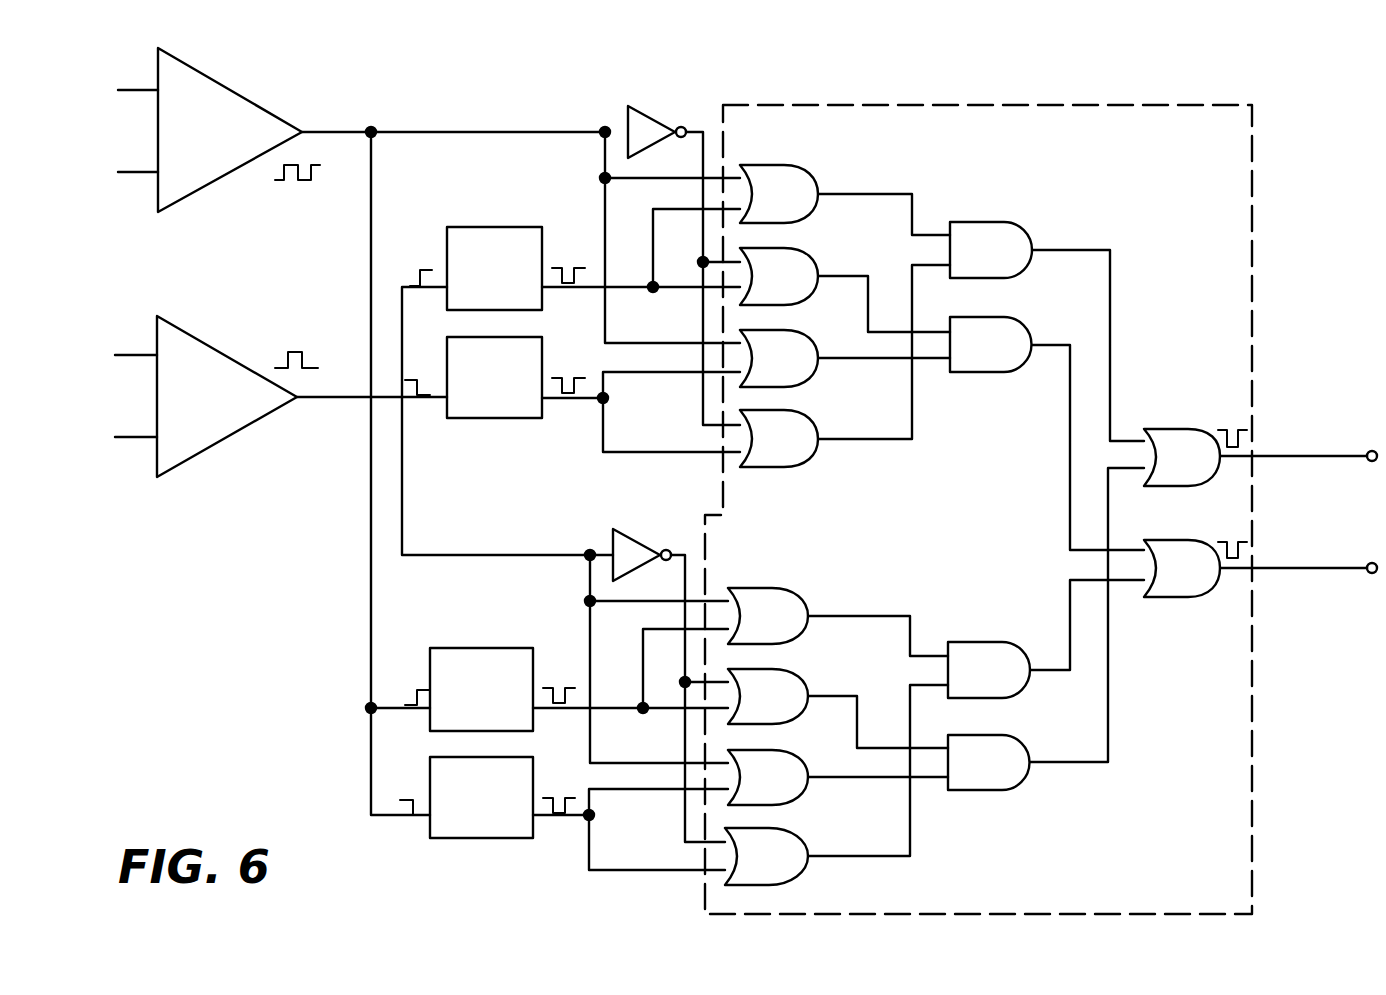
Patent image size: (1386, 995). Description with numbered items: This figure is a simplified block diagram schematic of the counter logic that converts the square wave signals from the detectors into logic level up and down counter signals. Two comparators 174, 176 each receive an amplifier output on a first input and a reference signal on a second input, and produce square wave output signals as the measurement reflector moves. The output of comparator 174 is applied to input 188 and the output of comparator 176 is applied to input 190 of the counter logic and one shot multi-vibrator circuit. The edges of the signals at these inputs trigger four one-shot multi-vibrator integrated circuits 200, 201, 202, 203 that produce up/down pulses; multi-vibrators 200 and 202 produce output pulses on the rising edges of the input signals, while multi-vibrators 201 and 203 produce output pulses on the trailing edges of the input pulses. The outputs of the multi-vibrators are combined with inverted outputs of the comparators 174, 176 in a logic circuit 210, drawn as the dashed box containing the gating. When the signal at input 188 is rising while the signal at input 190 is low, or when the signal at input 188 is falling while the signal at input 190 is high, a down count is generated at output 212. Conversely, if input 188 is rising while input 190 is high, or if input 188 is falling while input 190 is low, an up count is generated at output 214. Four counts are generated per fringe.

The comparator 174 is at (240, 94).
The comparator 176 is at (226, 355).
The input of counter logic and one shot multi-vibrator circuit 188 is at (343, 131).
The input of counter logic and one shot multi-vibrator circuit 190 is at (338, 400).
The one-shot multi-vibrator 200 is at (478, 227).
The one-shot multi-vibrator 201 is at (490, 418).
The one-shot multi-vibrator 202 is at (470, 648).
The one-shot multi-vibrator 203 is at (485, 838).
The logic circuit 210 is at (1018, 105).
The output 212 is at (1368, 573).
The output 214 is at (1368, 451).